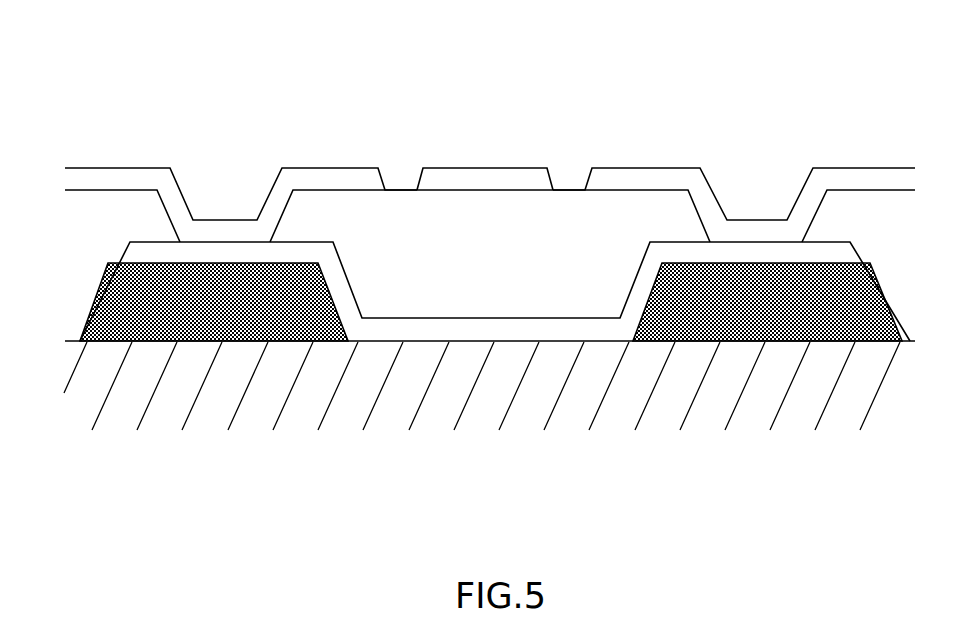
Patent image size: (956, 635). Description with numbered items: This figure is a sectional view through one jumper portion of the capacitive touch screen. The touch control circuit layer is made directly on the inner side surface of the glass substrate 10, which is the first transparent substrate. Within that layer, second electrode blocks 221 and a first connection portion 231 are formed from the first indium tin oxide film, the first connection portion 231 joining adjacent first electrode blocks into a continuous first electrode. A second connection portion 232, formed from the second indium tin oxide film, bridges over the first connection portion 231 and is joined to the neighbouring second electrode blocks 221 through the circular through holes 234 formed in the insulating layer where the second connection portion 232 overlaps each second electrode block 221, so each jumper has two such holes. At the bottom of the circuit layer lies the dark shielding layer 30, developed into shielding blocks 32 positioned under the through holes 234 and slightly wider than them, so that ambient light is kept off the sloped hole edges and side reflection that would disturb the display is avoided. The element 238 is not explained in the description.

The glass substrate 10 is at (528, 402).
The shielding layer 30 is at (497, 392).
The shielding block 32 is at (270, 318).
The second electrode block 221 is at (357, 172).
The first connection portion 231 is at (490, 175).
The second connection portion 232 is at (470, 330).
The through hole 234 is at (230, 197).
The interlayer 238 is at (425, 255).